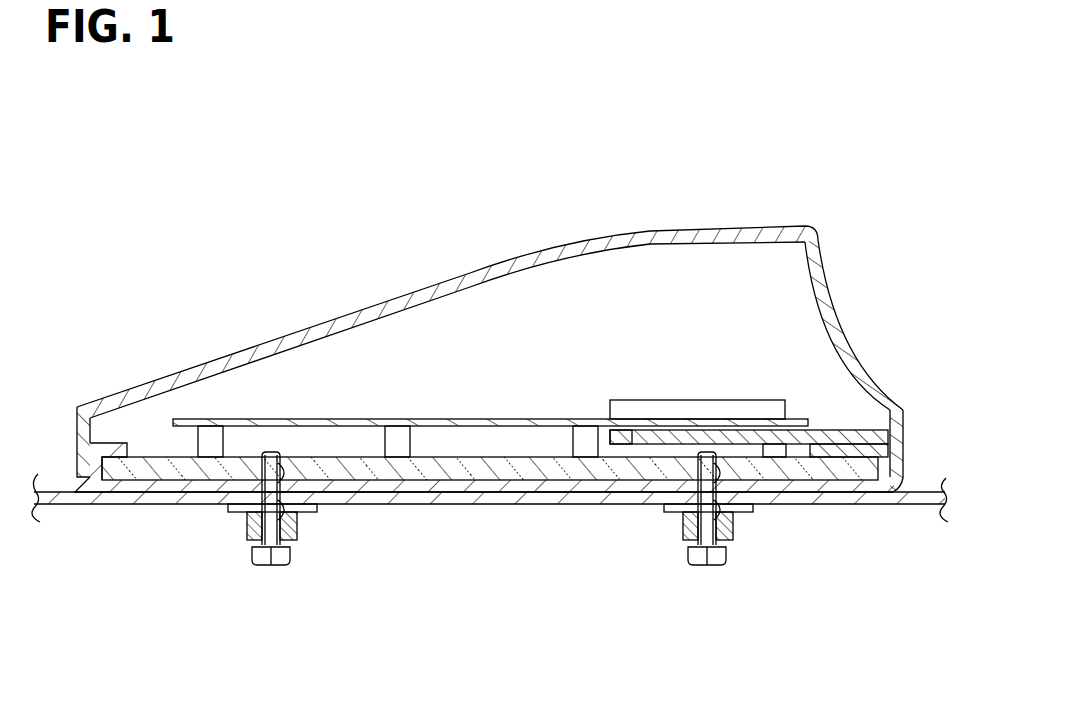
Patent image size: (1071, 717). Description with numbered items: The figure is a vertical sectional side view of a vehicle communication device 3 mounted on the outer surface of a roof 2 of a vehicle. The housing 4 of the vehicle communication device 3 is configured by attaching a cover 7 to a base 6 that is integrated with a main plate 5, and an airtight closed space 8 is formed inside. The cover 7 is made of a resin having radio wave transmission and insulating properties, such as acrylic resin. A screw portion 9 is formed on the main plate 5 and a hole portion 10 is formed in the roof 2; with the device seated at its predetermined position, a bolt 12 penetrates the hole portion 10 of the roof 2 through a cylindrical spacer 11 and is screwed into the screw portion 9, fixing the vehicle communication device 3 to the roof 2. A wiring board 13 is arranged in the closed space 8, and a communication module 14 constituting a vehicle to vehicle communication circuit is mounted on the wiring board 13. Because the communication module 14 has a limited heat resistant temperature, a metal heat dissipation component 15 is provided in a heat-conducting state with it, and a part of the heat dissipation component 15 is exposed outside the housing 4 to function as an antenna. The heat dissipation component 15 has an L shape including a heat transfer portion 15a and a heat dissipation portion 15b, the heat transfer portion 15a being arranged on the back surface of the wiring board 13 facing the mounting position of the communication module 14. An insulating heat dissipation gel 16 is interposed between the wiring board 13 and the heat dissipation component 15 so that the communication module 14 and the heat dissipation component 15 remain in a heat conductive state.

The roof 2 is at (864, 505).
The vehicle communication device 3 is at (516, 200).
The housing 4 is at (447, 317).
The main plate 5 is at (480, 481).
The base 6 is at (898, 488).
The cover 7 is at (380, 298).
The closed space 8 is at (544, 320).
The screw portion 9 is at (280, 487).
The hole portion 10 is at (297, 528).
The cylindrical spacer 11 is at (247, 523).
The bolt 12 is at (275, 567).
The wiring board 13 is at (523, 418).
The communication module 14 is at (700, 400).
The heat dissipation component 15 is at (817, 428).
The heat transfer portion 15a is at (890, 407).
The heat dissipation portion 15b is at (830, 287).
The heat dissipation gel 16 is at (607, 428).